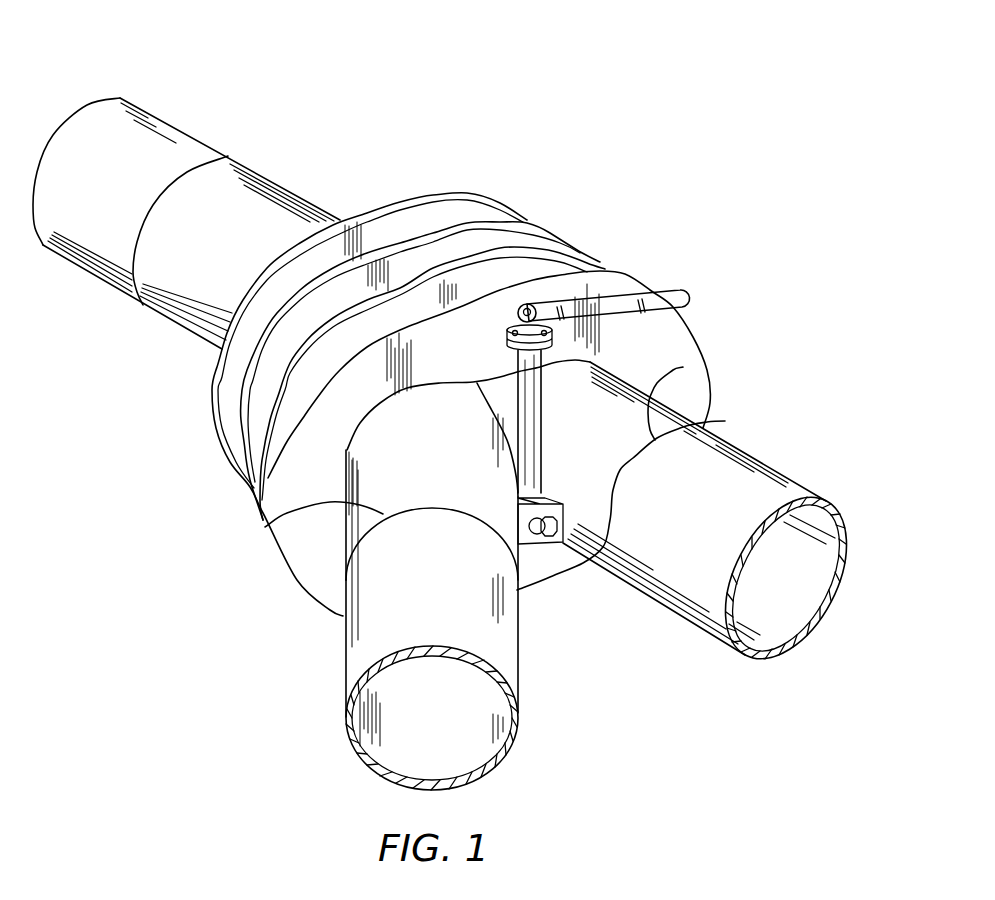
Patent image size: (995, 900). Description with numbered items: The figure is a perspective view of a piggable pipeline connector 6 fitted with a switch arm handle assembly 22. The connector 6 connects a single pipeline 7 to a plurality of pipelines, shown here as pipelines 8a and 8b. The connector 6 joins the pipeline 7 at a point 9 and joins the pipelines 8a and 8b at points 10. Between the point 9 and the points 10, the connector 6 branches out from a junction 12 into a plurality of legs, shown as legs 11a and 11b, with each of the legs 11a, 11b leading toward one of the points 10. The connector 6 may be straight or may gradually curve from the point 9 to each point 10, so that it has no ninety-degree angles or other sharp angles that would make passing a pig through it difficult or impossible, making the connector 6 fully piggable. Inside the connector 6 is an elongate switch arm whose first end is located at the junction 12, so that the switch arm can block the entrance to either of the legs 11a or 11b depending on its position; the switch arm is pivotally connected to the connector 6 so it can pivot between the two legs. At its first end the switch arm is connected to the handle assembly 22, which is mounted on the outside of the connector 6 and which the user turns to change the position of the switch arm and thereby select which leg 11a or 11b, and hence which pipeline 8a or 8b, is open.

The piggable pipeline connector 6 is at (655, 137).
The single pipeline 7 is at (84, 150).
The pipeline 8a is at (370, 630).
The pipeline 8b is at (757, 490).
The point 9 is at (196, 165).
The point 10 is at (683, 367).
The leg 11a is at (449, 481).
The leg 11b is at (611, 443).
The junction 12 is at (500, 372).
The handle assembly 22 is at (702, 282).